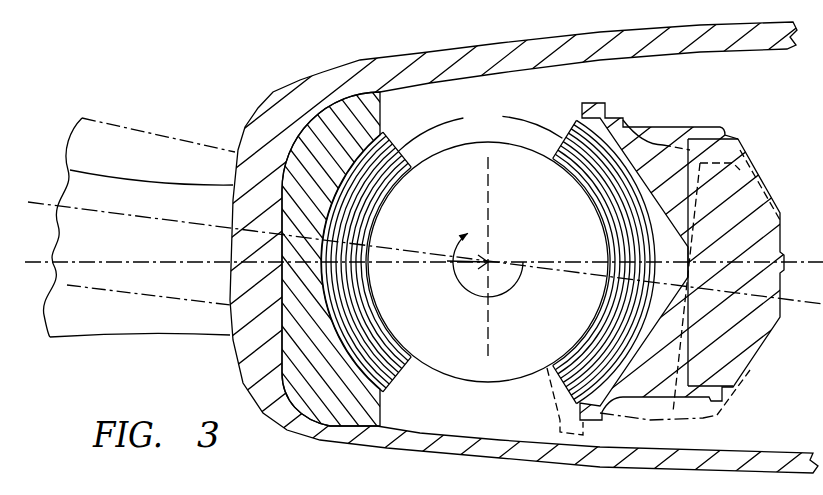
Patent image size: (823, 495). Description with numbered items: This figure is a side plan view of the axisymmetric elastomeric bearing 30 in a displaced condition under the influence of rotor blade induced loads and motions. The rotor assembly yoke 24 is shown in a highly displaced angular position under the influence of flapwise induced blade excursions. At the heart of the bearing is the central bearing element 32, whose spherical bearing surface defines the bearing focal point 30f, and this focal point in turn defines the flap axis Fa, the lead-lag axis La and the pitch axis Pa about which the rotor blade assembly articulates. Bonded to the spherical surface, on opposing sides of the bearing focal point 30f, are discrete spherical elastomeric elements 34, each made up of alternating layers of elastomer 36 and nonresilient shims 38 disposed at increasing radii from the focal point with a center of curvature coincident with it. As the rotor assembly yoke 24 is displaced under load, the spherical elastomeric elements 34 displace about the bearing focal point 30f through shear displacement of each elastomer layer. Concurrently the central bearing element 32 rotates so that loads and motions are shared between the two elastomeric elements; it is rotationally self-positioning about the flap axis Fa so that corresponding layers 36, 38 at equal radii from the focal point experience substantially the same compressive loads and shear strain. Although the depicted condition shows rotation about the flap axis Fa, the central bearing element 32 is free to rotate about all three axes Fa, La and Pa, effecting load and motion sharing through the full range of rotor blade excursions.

The rotor assembly yoke 24 is at (142, 133).
The axisymmetric elastomeric bearing 30 is at (712, 110).
The bearing focal point 30f is at (494, 257).
The central bearing element 32 is at (468, 352).
The spherical elastomeric element 34 is at (481, 128).
The elastomer layer 36 is at (607, 298).
The nonresilient shim 38 is at (593, 340).
The lead-lag axis La is at (487, 192).
The flap axis Fa is at (492, 262).
The pitch axis Pa is at (437, 261).